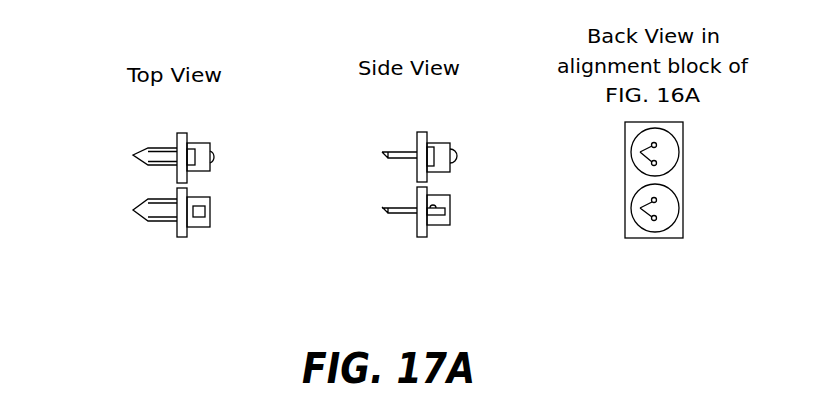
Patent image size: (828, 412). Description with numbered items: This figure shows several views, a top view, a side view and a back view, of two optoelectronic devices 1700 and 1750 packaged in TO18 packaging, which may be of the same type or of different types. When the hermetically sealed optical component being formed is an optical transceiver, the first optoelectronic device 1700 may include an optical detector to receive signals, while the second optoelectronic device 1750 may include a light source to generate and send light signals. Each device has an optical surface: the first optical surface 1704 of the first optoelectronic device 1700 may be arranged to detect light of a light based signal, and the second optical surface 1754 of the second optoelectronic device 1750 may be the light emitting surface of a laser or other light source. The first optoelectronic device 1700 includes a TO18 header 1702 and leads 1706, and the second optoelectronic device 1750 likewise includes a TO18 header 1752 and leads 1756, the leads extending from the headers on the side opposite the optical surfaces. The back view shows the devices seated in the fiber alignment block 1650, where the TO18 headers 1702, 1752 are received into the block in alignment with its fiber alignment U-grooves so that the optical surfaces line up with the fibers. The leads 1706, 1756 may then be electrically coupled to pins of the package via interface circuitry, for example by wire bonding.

The first optoelectronic device 1700 is at (120, 121).
The TO18 header 1702 is at (182, 133).
The first optical surface 1704 is at (219, 157).
The leads 1706 is at (133, 155).
The second optoelectronic device 1750 is at (123, 261).
The TO18 header 1752 is at (187, 237).
The second optical surface 1754 is at (205, 210).
The leads 1756 is at (133, 210).
The fiber alignment block 1650 is at (647, 238).